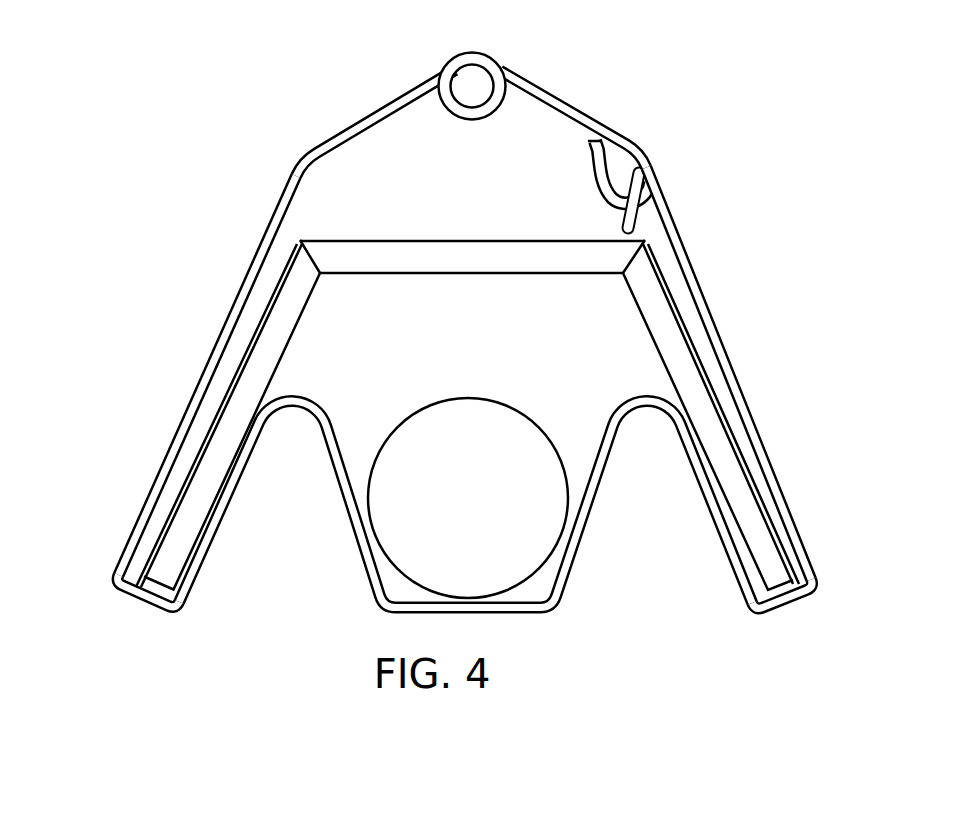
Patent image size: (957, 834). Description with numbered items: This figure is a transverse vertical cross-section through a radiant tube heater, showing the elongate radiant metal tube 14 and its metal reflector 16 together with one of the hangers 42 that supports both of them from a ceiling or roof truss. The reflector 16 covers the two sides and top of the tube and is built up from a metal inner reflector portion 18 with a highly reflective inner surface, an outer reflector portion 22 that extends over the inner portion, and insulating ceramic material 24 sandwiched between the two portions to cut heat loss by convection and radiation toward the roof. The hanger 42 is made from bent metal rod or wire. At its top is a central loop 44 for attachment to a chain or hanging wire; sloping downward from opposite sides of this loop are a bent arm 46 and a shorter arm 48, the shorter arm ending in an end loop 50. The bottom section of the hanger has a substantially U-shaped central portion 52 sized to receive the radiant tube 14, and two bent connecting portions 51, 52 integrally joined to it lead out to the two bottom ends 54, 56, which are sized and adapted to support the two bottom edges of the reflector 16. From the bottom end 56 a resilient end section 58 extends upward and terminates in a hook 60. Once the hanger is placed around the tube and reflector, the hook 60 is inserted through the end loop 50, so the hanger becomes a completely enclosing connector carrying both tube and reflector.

The radiant metal tube 14 is at (510, 403).
The metal reflector 16 is at (375, 240).
The inner reflector portion 18 is at (466, 279).
The outer reflector portion 22 is at (672, 290).
The insulating ceramic material 24 is at (678, 357).
The hanger 42 is at (235, 286).
The central top loop 44 is at (493, 66).
The bent arm 46 is at (280, 175).
The shorter arm 48 is at (573, 113).
The end loop 50 is at (620, 167).
The bent connecting portion 51 is at (215, 530).
The U-shaped central portion 52 is at (370, 553).
The bottom end of hanger 54 is at (125, 588).
The bottom end of hanger 56 is at (800, 598).
The resilient end section 58 is at (747, 417).
The hook 60 is at (642, 188).